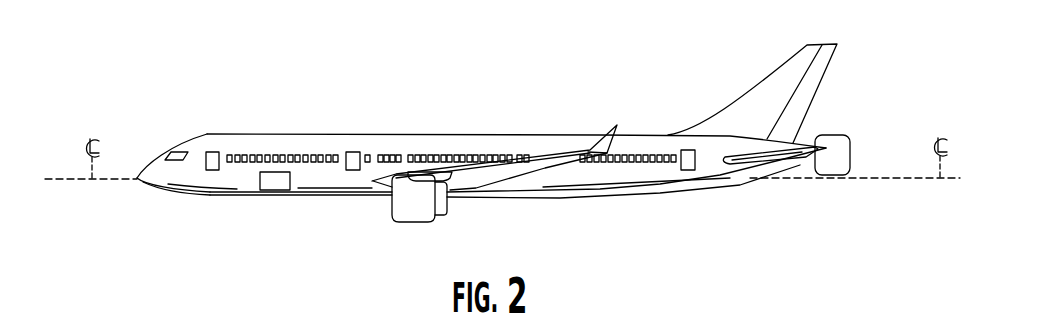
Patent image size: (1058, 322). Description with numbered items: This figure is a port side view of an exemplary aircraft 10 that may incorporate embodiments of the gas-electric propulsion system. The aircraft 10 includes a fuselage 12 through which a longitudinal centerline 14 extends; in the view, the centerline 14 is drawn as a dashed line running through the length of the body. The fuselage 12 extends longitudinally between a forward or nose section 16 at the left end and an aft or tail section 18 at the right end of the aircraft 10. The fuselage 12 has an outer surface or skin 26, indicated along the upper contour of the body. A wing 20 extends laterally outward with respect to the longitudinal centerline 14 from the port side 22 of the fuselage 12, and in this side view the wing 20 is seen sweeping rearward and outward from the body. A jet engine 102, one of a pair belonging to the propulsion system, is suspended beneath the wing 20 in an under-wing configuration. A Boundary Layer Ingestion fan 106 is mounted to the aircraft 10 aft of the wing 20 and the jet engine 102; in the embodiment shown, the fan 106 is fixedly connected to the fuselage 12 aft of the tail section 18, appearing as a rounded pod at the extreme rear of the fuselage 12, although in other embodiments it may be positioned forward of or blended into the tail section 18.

The aircraft 10 is at (191, 79).
The fuselage 12 is at (479, 177).
The longitudinal centerline 14 is at (57, 179).
The nose section 16 is at (143, 196).
The tail section 18 is at (749, 200).
The wing 20 is at (547, 163).
The port side 22 is at (606, 190).
The outer surface or skin 26 is at (393, 134).
The jet engine 102 is at (398, 226).
The Boundary Layer Ingestion (BLI) fan 106 is at (848, 123).